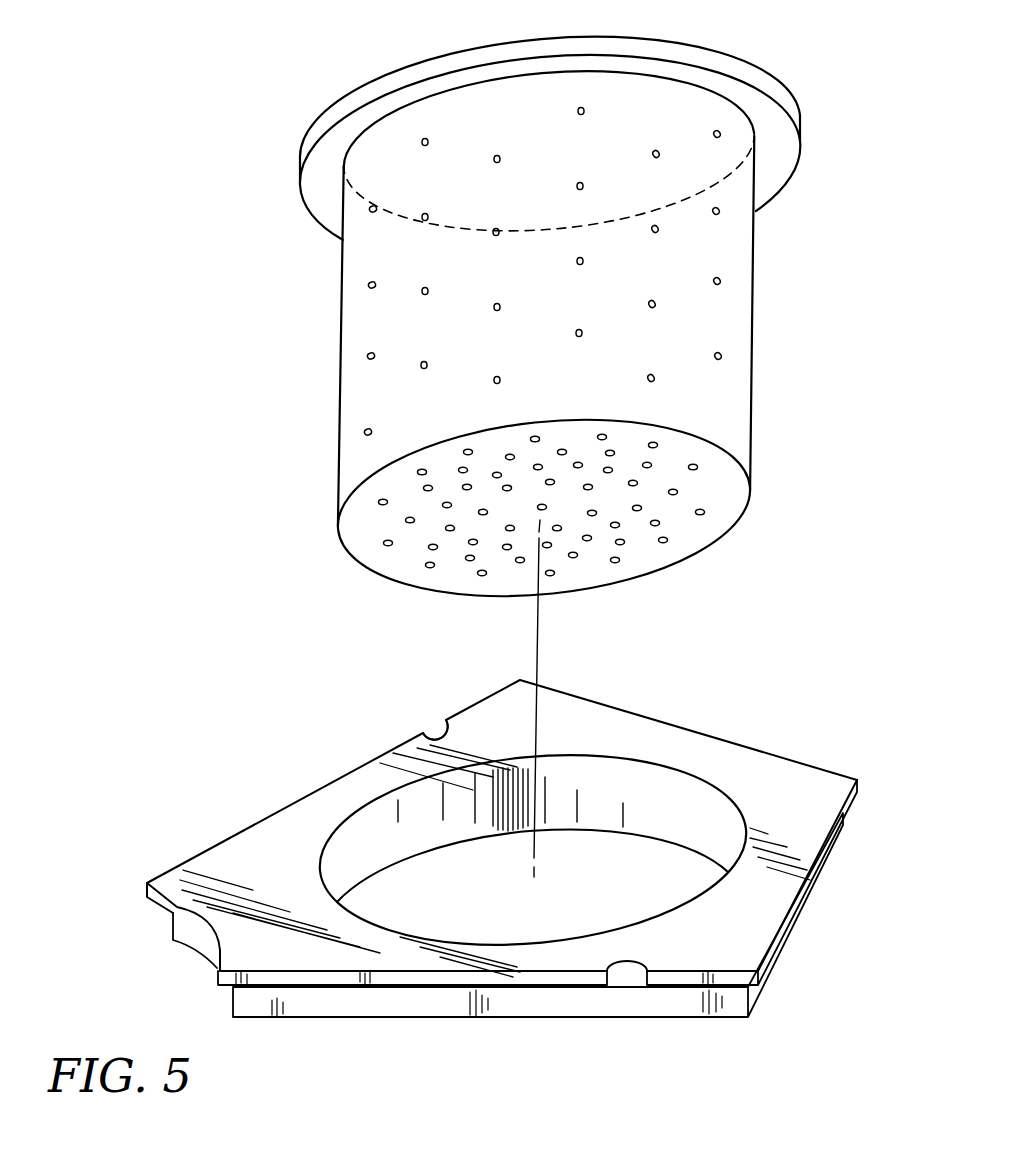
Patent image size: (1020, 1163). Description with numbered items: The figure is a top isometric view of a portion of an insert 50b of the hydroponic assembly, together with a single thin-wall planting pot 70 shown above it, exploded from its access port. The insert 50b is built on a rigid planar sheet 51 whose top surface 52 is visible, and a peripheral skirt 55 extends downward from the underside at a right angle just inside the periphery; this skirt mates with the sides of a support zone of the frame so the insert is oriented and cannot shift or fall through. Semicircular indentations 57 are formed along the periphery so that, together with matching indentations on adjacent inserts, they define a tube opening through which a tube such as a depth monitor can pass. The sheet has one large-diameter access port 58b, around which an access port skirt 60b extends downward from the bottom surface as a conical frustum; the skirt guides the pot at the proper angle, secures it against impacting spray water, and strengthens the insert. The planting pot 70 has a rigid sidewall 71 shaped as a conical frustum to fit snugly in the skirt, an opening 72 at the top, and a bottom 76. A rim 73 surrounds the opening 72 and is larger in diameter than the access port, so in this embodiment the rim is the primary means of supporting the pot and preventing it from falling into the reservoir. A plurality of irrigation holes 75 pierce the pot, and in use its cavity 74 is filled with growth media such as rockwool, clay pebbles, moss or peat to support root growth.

The insert 50b is at (487, 751).
The rigid planar sheet 51 is at (502, 832).
The top surface 52 is at (306, 862).
The peripheral skirt 55 is at (192, 932).
The semicircular indentation 57 is at (425, 730).
The access port 58b is at (625, 856).
The access port skirt 60b is at (723, 802).
The planting pot 70 is at (506, 317).
The rigid sidewall 71 is at (724, 317).
The opening 72 is at (471, 220).
The rim 73 is at (325, 130).
The cavity 74 is at (607, 232).
The irrigation holes 75 is at (710, 356).
The bottom 76 is at (728, 486).